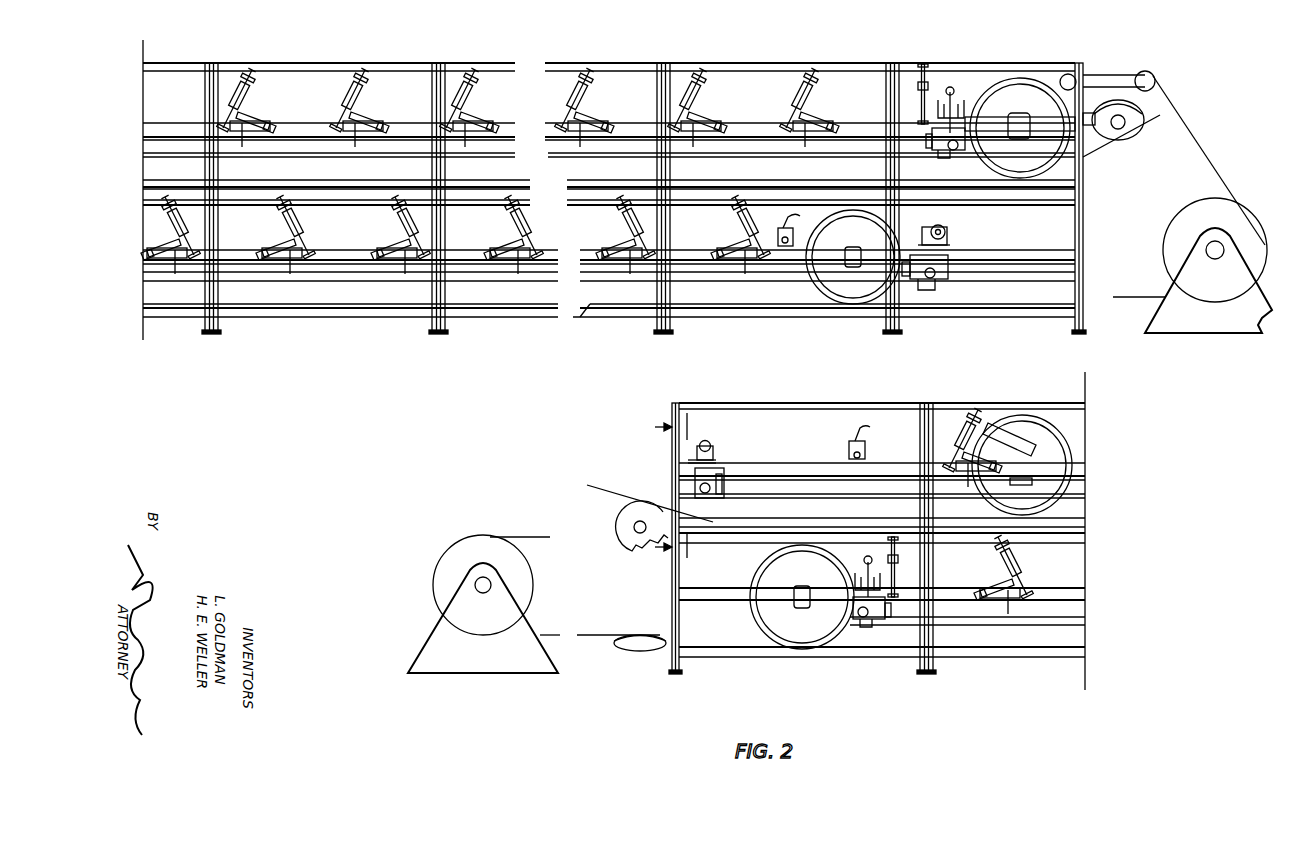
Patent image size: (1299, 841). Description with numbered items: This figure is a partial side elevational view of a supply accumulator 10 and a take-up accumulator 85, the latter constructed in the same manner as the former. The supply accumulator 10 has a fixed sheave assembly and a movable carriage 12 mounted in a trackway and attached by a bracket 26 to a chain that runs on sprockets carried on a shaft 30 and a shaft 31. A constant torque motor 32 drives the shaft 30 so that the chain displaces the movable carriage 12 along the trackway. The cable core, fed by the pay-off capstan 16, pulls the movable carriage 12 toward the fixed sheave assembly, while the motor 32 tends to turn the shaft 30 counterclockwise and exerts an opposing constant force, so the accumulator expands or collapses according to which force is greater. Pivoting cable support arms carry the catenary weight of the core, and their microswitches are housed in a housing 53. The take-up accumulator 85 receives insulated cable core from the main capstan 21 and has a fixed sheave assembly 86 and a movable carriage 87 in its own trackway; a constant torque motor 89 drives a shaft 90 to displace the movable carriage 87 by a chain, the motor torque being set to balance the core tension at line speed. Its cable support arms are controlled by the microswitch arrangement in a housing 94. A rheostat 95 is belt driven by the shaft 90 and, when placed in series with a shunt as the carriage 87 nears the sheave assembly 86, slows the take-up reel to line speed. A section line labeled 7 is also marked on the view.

The supply accumulator 10 is at (789, 51).
The section line 7 is at (668, 493).
The movable carriage 12 is at (1078, 445).
The pay-off capstan 16 is at (1172, 230).
The main capstan 21 is at (433, 583).
The bracket 26 is at (1028, 486).
The shaft 30 is at (705, 495).
The shaft 31 is at (952, 150).
The constant torque motor 32 is at (692, 490).
The housing 53 is at (954, 88).
The take-up accumulator 85 is at (618, 326).
The fixed sheave assembly 86 is at (795, 640).
The movable carriage 87 is at (862, 298).
The constant torque motor 89 is at (946, 268).
The shaft 90 is at (925, 281).
The housing 94 is at (860, 562).
The rheostat 95 is at (925, 230).